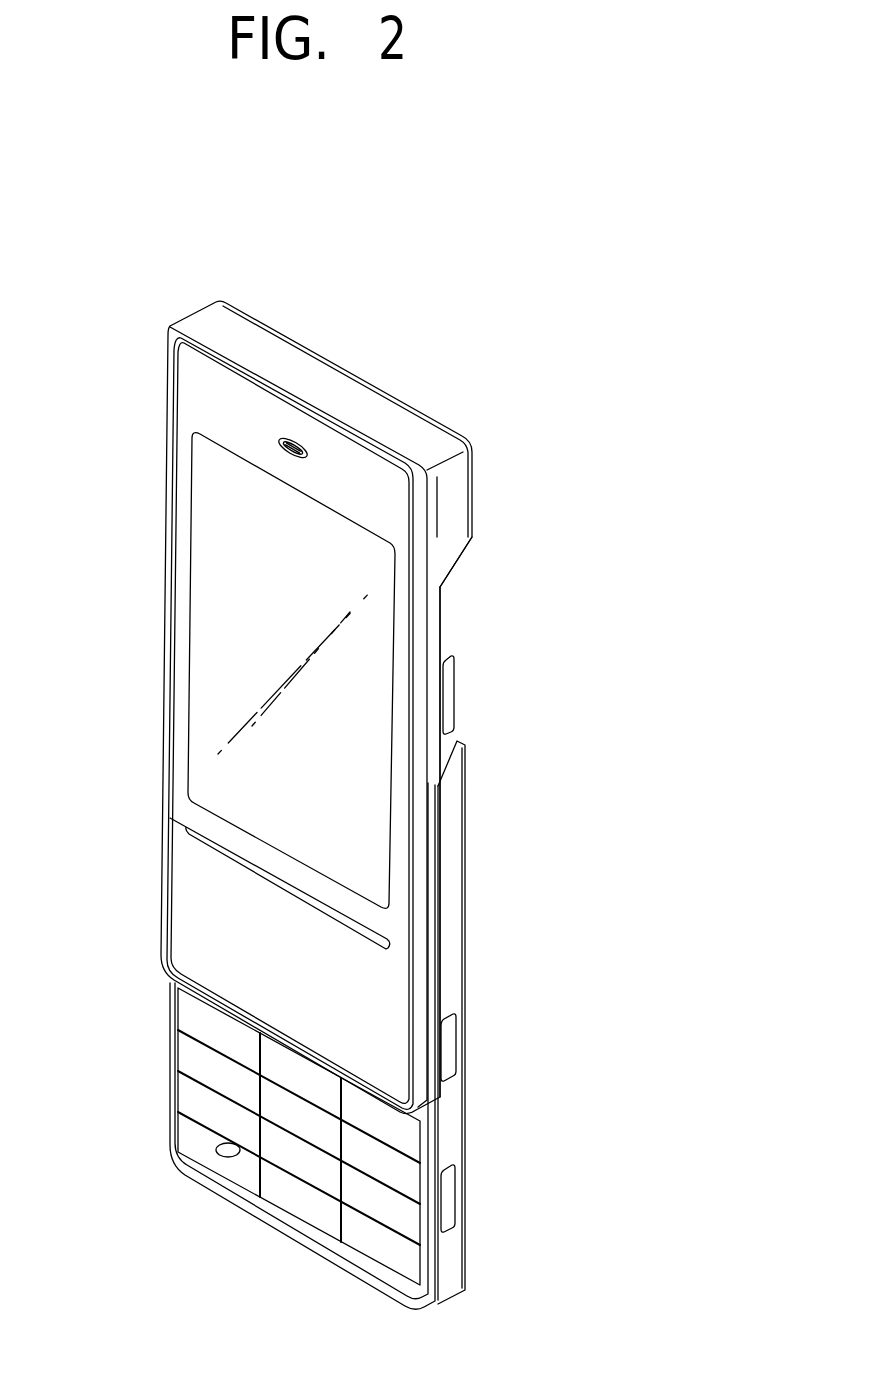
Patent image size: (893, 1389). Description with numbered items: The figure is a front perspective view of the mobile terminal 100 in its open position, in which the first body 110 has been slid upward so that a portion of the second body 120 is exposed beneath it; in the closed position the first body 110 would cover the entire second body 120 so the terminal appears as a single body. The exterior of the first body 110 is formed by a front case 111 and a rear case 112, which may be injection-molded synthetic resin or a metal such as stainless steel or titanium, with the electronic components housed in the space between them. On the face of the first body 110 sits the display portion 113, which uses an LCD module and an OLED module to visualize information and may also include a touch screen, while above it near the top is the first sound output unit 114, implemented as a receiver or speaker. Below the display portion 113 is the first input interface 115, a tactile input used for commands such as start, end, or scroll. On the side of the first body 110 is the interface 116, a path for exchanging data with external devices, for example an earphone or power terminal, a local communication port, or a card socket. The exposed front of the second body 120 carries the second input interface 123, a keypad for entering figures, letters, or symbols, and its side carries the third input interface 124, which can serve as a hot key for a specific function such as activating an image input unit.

The mobile terminal 100 is at (513, 307).
The first body 110 is at (130, 303).
The front case 111 is at (457, 524).
The rear case 112 is at (471, 480).
The display portion 113 is at (198, 568).
The first sound output unit 114 is at (297, 440).
The first input interface 115 is at (187, 883).
The interface 116 is at (450, 697).
The second body 120 is at (473, 893).
The second input interface 123 is at (188, 1057).
The third input interface 124 is at (451, 1200).